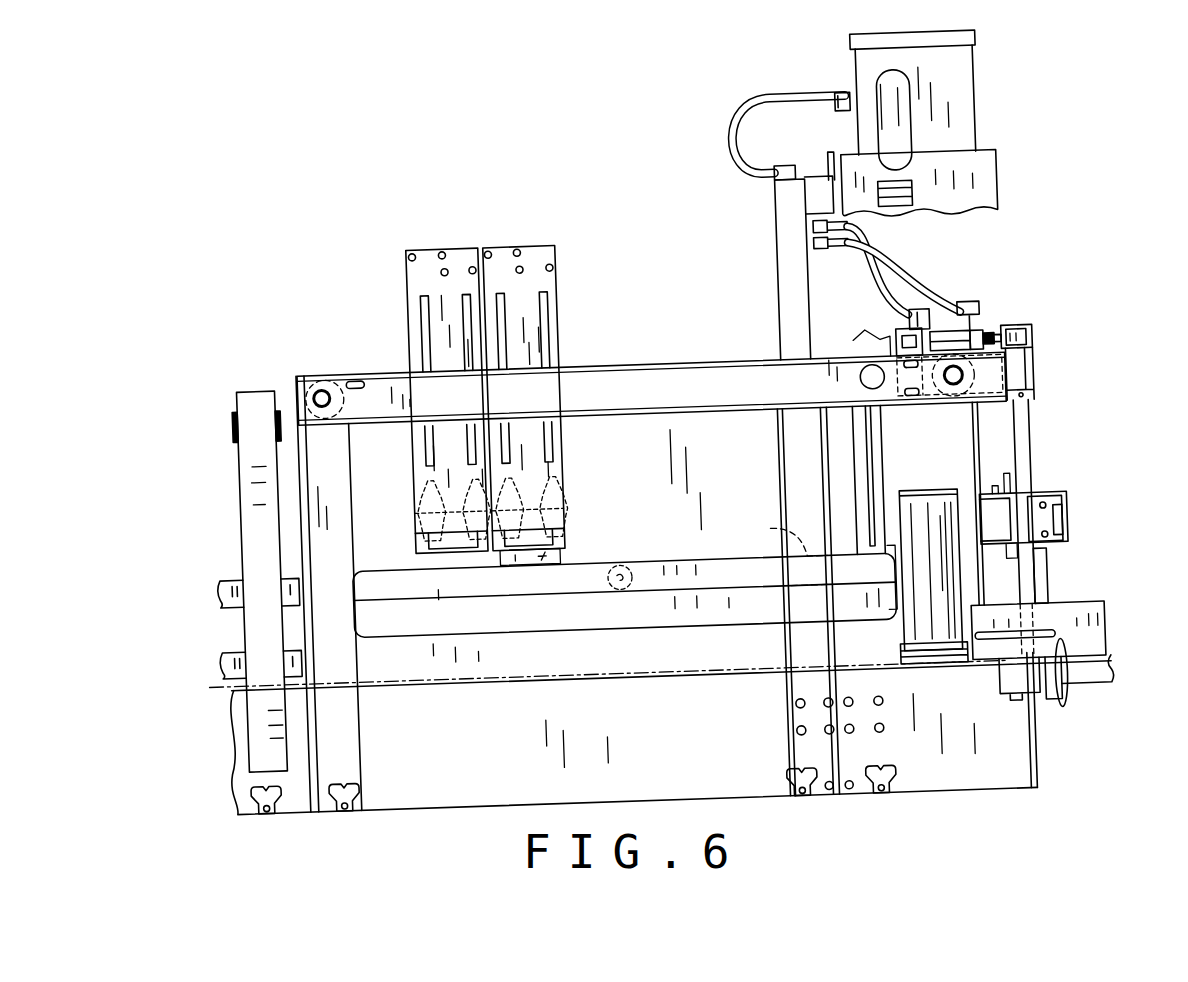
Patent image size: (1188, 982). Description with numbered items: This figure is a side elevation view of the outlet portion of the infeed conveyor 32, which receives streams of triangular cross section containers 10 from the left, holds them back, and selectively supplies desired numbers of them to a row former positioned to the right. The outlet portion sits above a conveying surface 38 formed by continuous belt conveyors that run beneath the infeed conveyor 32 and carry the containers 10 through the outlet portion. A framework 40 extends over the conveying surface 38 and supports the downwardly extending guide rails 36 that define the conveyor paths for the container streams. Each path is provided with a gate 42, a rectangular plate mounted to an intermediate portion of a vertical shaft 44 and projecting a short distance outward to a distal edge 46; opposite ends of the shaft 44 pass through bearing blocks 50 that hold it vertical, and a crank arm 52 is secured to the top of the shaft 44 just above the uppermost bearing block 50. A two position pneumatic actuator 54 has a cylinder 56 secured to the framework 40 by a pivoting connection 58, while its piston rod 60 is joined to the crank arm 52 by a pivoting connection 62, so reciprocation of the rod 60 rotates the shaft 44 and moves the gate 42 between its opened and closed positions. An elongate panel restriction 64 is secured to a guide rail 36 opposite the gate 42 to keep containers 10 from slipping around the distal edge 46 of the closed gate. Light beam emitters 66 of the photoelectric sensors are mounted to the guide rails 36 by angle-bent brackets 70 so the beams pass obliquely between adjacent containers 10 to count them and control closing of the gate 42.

The containers 10 is at (538, 555).
The infeed conveyor 32 is at (602, 334).
The guide rails 36 is at (593, 560).
The conveying surface 38 is at (373, 683).
The framework 40 is at (356, 375).
The gate 42 is at (1043, 590).
The vertical shaft 44 is at (1028, 447).
The distal edge 46 is at (1047, 563).
The bearing blocks 50 is at (1023, 367).
The crank arm 52 is at (1032, 330).
The two position pneumatic actuator 54 is at (941, 298).
The cylinder 56 is at (950, 330).
The pivoting connection 58 is at (896, 334).
The piston rod 60 is at (994, 333).
The pivoting connection 62 is at (1014, 328).
The restriction 64 is at (772, 528).
The light beam emitters 66 is at (1067, 508).
The brackets 70 is at (1047, 495).